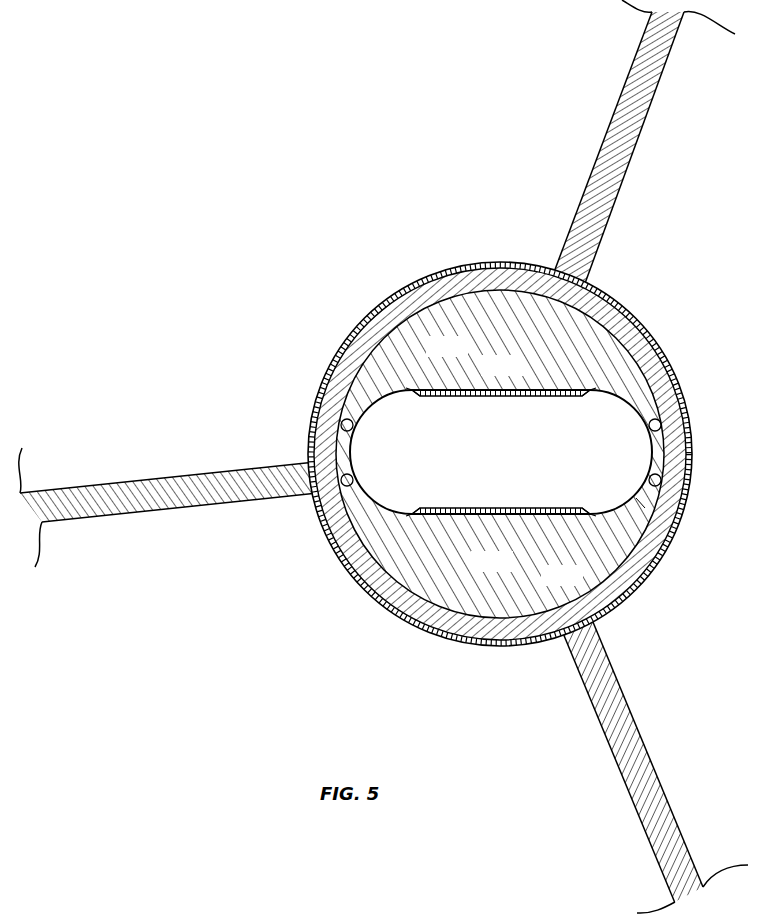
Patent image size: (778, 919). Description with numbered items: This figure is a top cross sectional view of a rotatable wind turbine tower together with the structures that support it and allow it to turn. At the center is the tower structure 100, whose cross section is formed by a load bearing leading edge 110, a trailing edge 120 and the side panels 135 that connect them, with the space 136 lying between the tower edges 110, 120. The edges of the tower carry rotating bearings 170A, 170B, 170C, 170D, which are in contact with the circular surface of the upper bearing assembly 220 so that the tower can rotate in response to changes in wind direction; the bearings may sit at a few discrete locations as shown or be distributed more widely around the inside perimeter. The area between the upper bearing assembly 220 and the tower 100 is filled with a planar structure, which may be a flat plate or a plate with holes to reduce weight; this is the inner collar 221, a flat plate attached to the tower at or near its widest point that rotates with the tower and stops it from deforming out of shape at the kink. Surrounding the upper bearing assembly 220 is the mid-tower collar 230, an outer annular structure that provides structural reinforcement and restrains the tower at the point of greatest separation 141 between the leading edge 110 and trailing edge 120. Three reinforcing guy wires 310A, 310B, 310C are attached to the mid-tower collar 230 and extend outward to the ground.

The tower structure 100 is at (548, 532).
The leading edge 110 is at (353, 447).
The trailing edge 120 is at (663, 452).
The side panels 135 is at (457, 385).
The space 136 is at (513, 407).
The point of greatest separation 141 is at (642, 504).
The rotating bearing 170A is at (661, 422).
The rotating bearing 170B is at (661, 484).
The rotating bearing 170C is at (343, 486).
The rotating bearing 170D is at (342, 422).
The upper bearing assembly 220 is at (638, 553).
The inner collar 221 is at (597, 345).
The mid-tower collar 230 is at (356, 578).
The guy wire 310A is at (633, 708).
The guy wire 310B is at (187, 511).
The guy wire 310C is at (620, 200).